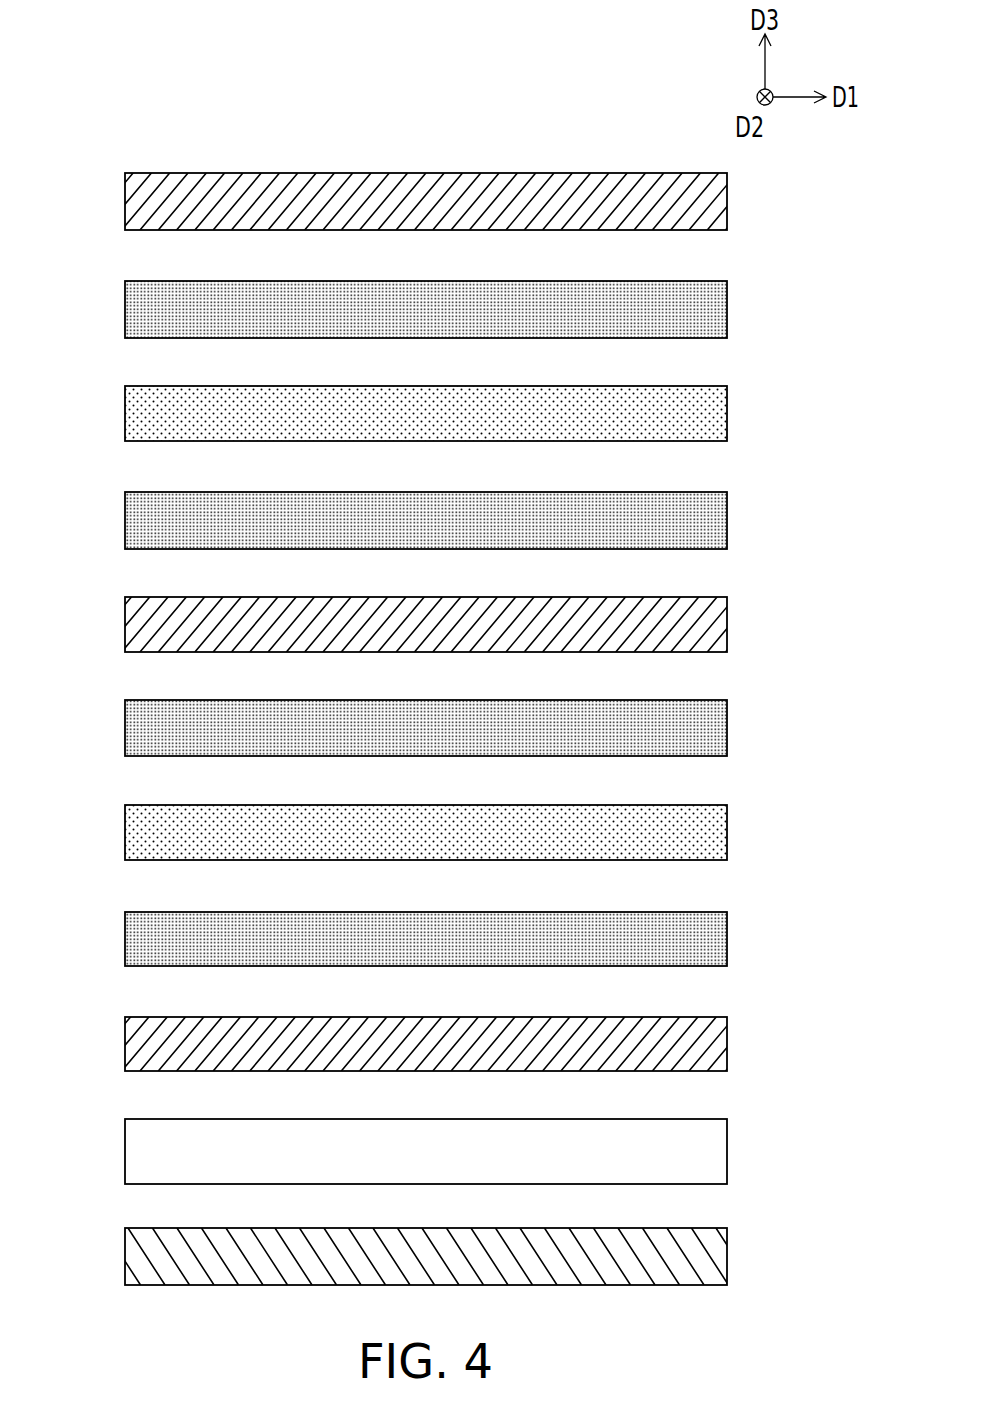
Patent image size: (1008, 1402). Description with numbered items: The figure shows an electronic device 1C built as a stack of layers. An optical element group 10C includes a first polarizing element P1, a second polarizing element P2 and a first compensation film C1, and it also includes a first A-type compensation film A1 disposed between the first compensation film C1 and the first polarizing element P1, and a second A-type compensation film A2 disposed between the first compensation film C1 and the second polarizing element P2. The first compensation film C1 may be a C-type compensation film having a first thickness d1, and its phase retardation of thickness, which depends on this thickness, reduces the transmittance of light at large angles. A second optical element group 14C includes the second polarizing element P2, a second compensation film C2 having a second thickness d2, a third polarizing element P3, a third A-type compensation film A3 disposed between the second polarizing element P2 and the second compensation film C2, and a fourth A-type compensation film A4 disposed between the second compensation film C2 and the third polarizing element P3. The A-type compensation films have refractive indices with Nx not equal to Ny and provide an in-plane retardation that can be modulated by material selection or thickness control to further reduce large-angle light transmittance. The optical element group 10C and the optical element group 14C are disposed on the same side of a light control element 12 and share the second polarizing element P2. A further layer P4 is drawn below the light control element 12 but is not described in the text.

The electronic device 1C is at (864, 1326).
The optical element group 10C is at (788, 175).
The optical element group 14C is at (815, 597).
The first polarizing element P1 is at (727, 202).
The second polarizing element P2 is at (727, 625).
The third polarizing element P3 is at (727, 1044).
The fourth plate layer P4 is at (727, 1256).
The first A-type compensation film A1 is at (727, 310).
The second A-type compensation film A2 is at (727, 521).
The third A-type compensation film A3 is at (727, 728).
The fourth A-type compensation film A4 is at (727, 939).
The first compensation film C1 is at (727, 413).
The second compensation film C2 is at (727, 833).
The light control element 12 is at (727, 1151).
The first thickness d1 is at (125, 441).
The second thickness d2 is at (125, 860).